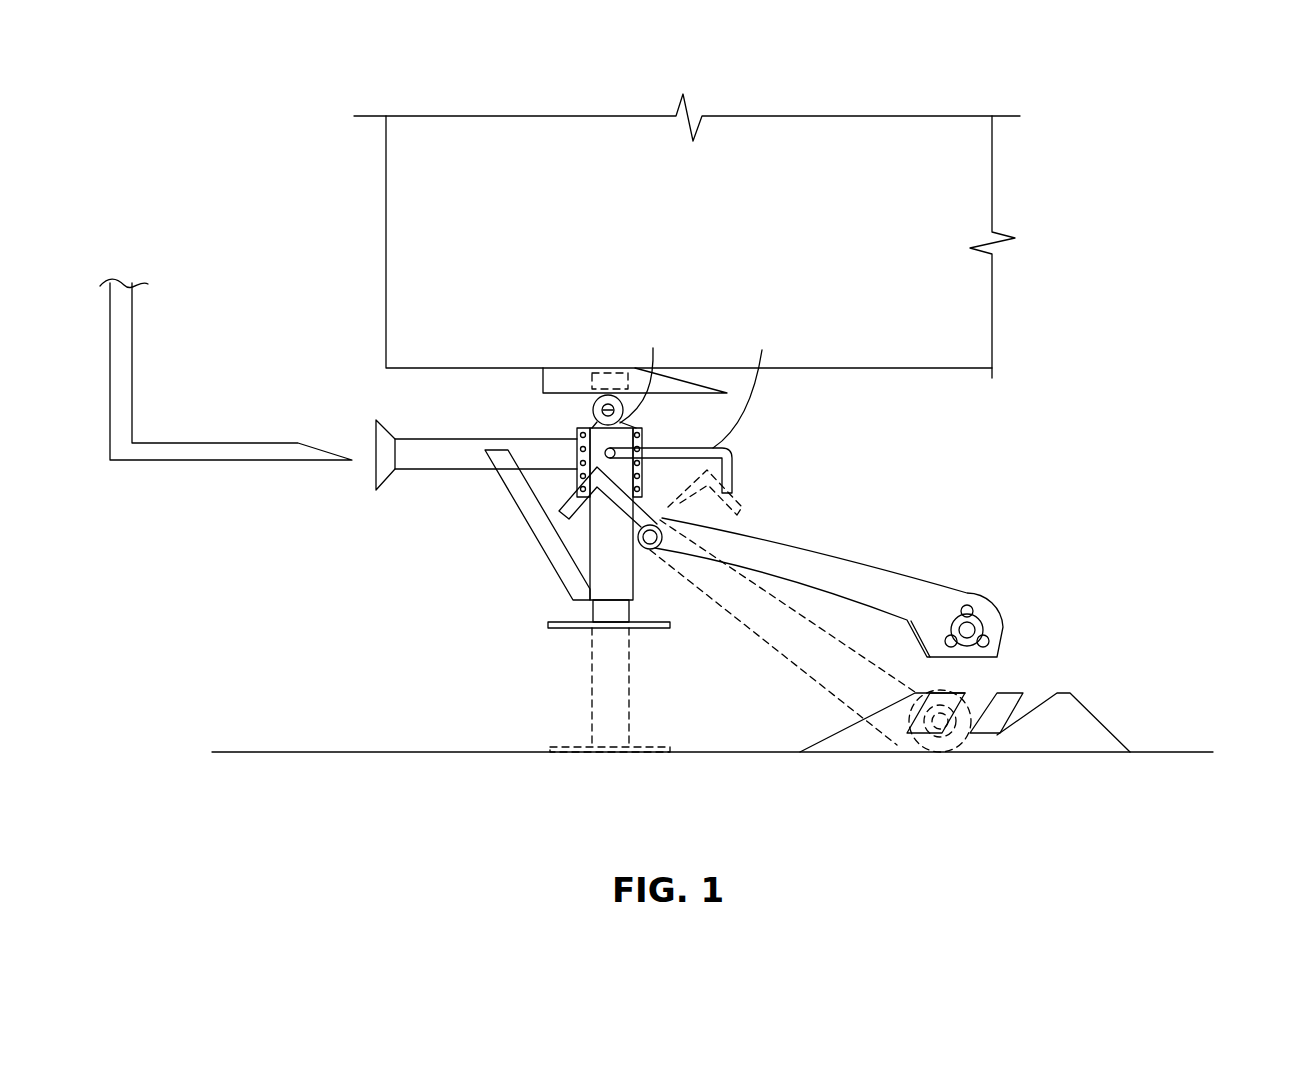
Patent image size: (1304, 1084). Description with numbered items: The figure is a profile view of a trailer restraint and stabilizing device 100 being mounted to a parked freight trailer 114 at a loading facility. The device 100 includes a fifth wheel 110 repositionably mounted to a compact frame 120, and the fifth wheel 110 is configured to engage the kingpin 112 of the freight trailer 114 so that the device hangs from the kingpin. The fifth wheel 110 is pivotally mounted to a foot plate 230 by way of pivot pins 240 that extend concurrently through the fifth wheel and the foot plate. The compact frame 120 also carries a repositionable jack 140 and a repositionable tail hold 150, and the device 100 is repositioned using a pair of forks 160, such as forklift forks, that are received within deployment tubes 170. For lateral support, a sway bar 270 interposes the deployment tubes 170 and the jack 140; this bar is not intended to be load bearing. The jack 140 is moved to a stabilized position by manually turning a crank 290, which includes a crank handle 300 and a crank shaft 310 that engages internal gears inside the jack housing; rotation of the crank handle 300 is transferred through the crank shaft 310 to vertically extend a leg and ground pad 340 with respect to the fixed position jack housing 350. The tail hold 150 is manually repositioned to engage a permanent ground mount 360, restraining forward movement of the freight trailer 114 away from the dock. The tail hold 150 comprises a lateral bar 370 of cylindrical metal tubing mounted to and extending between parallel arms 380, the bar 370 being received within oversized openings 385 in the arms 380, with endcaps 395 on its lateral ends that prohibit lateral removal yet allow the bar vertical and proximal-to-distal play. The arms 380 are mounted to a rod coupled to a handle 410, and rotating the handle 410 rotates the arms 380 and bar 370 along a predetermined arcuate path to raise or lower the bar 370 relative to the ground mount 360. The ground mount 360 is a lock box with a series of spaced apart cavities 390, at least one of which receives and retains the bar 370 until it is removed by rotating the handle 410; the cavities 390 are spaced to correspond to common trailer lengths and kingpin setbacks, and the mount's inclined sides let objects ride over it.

The trailer restraint and stabilizing device 100 is at (353, 507).
The fifth wheel 110 is at (703, 384).
The kingpin 112 is at (612, 366).
The freight trailer 114 is at (646, 245).
The compact frame 120 is at (735, 455).
The jack 140 is at (582, 568).
The tail hold 150 is at (1008, 618).
The forks 160 is at (220, 452).
The deployment tubes 170 is at (407, 473).
The foot plate 230 is at (647, 373).
The pivot pins 240 is at (602, 410).
The right sway bar 270 is at (523, 503).
The crank 290 is at (748, 385).
The crank handle 300 is at (732, 483).
The crank shaft 310 is at (576, 447).
The ground pad 340 is at (636, 638).
The jack housing 350 is at (600, 518).
The ground mount 360 is at (841, 745).
The lateral bar 370 is at (967, 630).
The arms 380 is at (867, 588).
The openings 385 is at (958, 610).
The cavities 390 is at (997, 727).
The endcaps 395 is at (955, 618).
The handle 410 is at (646, 512).